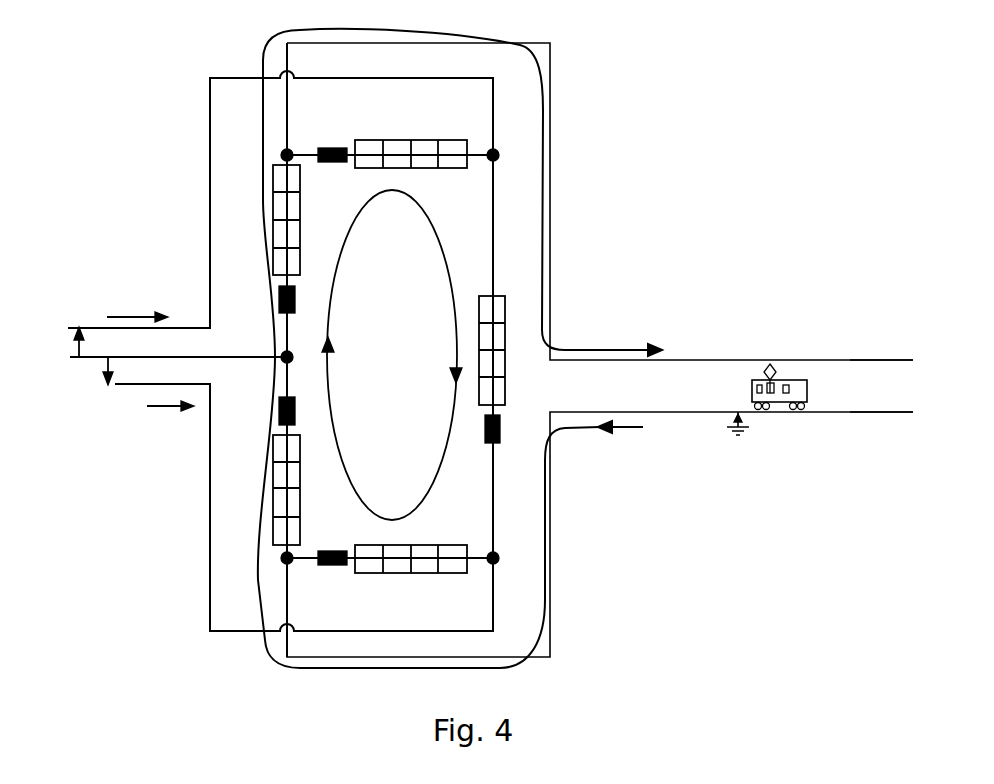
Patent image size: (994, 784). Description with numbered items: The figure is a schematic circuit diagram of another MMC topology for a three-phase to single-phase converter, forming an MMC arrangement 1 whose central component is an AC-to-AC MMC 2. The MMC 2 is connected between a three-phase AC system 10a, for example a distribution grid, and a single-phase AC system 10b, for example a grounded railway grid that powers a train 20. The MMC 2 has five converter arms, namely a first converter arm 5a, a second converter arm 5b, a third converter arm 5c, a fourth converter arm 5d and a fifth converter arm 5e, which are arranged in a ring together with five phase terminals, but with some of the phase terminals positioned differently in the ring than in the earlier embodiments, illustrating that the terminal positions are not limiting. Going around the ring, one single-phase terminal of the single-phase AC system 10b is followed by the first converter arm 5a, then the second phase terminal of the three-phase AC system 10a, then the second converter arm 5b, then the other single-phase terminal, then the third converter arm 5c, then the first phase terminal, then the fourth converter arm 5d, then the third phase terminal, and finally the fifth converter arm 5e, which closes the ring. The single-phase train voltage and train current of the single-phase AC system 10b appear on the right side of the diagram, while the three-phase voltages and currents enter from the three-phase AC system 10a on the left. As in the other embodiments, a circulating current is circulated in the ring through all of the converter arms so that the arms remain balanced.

The MMC arrangement 1 is at (782, 90).
The AC-to-AC MMC 2 is at (616, 150).
The first converter arm 5a is at (305, 435).
The second converter arm 5b is at (305, 165).
The third converter arm 5c is at (467, 137).
The fourth converter arm 5d is at (510, 296).
The fifth converter arm 5e is at (467, 580).
The three-phase AC system 10a is at (50, 318).
The single-phase AC system 10b is at (913, 348).
The train 20 is at (781, 413).